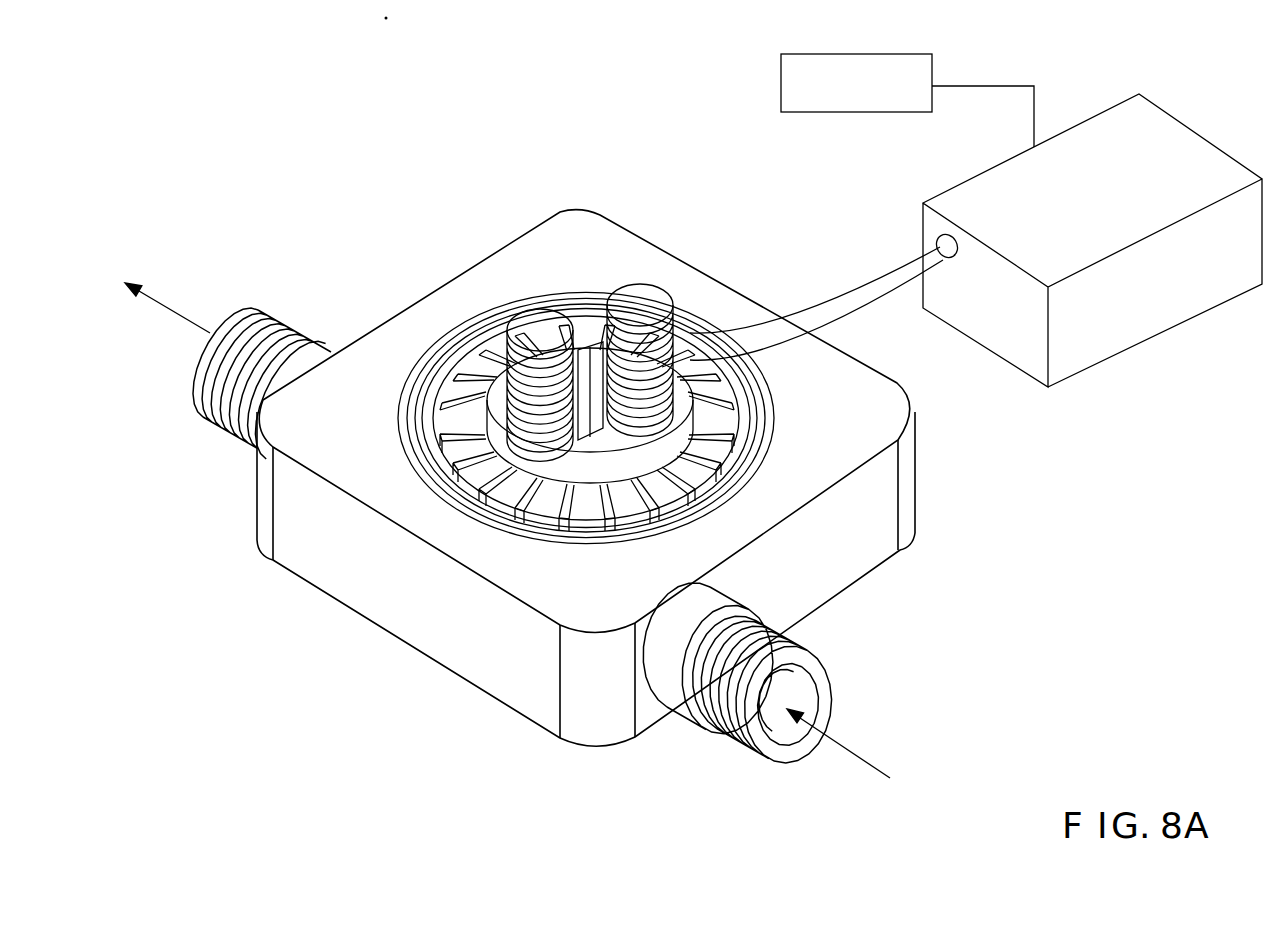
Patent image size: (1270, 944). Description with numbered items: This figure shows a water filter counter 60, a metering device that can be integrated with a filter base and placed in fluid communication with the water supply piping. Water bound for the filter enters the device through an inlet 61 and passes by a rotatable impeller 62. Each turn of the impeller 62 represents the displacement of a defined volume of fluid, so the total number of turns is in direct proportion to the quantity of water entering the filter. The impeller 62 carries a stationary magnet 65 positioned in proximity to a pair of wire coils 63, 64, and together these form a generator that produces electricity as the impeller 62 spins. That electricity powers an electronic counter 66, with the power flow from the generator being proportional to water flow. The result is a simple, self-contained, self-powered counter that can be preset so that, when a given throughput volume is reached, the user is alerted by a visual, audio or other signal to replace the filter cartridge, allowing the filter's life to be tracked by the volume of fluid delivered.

The water filter counter 60 is at (968, 539).
The inlet 61 is at (740, 617).
The rotatable impeller 62 is at (462, 382).
The wire coil 63 is at (653, 302).
The wire coil 64 is at (530, 318).
The stationary magnet 65 is at (590, 447).
The electronic counter 66 is at (1095, 328).